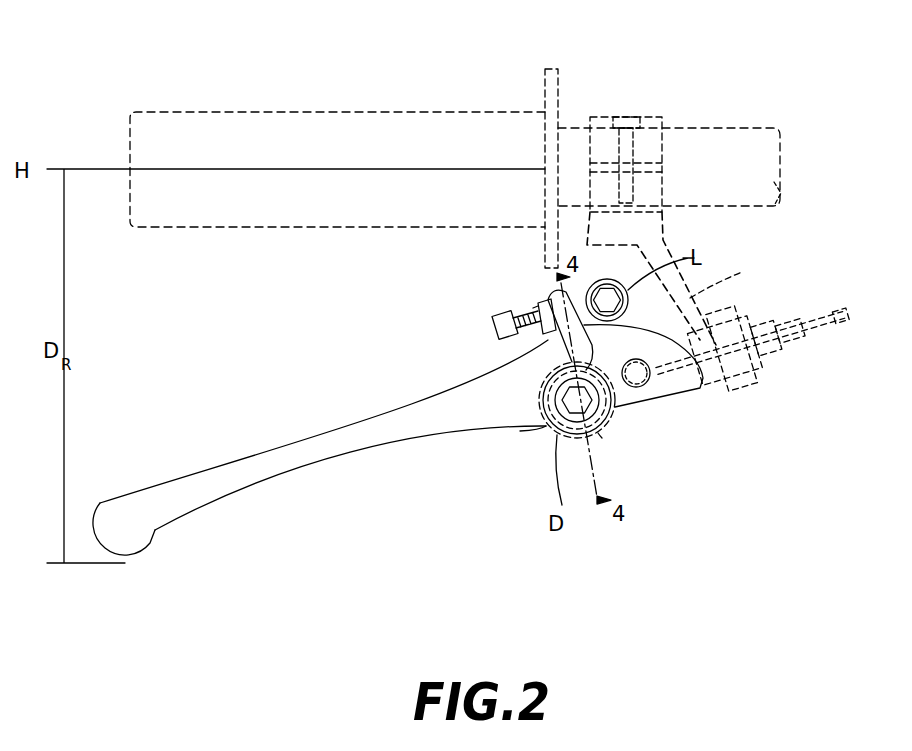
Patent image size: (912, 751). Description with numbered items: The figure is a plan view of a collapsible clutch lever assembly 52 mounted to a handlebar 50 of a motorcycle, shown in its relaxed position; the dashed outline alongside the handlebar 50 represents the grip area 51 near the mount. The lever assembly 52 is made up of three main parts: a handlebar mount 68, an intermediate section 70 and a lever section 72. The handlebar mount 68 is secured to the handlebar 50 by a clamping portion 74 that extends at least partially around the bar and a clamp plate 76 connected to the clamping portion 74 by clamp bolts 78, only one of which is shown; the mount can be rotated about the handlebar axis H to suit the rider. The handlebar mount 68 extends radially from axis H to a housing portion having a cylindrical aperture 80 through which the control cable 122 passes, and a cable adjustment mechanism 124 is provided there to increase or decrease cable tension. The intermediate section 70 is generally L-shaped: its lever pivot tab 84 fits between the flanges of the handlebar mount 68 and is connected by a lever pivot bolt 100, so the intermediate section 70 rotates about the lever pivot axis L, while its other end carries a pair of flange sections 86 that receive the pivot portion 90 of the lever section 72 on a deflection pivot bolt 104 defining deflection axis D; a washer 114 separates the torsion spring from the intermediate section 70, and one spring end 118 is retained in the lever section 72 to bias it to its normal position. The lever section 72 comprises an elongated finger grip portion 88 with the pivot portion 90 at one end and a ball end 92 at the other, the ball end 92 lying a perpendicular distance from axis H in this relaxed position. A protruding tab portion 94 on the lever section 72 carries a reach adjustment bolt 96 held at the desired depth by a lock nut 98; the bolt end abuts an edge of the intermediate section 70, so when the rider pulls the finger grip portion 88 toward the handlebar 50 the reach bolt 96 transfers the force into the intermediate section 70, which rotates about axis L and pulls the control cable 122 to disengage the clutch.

The handlebar 50 is at (745, 127).
The handlebar grip 51 is at (215, 110).
The clutch lever assembly 52 is at (709, 548).
The handlebar mount 68 is at (660, 228).
The intermediate section 70 is at (695, 384).
The lever section 72 is at (320, 490).
The clamping portion 74 is at (663, 190).
The clamp plate 76 is at (615, 117).
The clamp bolt 78 is at (633, 117).
The cylindrical aperture 80 is at (768, 308).
The lever pivot tab 84 is at (726, 276).
The flange sections 86 is at (592, 422).
The finger grip portion 88 is at (332, 462).
The pivot portion 90 is at (518, 432).
The ball end 92 is at (118, 565).
The protruding tab portion 94 is at (550, 295).
The reach adjustment bolt 96 is at (497, 330).
The lock nut 98 is at (550, 338).
The lever pivot bolt 100 is at (610, 299).
The deflection pivot bolt 104 is at (585, 400).
The washer 114 is at (598, 433).
The torsion spring end 118 is at (552, 368).
The control cable 122 is at (832, 322).
The cable adjustment mechanism 124 is at (748, 393).